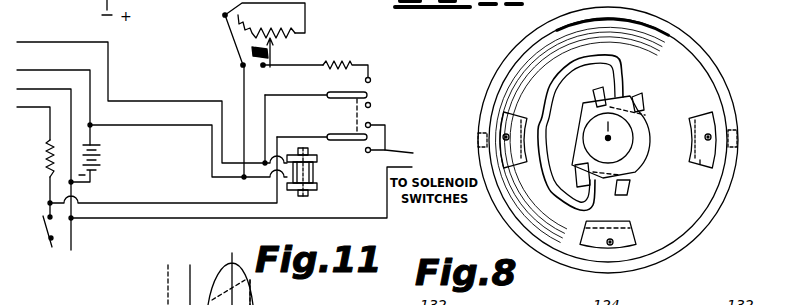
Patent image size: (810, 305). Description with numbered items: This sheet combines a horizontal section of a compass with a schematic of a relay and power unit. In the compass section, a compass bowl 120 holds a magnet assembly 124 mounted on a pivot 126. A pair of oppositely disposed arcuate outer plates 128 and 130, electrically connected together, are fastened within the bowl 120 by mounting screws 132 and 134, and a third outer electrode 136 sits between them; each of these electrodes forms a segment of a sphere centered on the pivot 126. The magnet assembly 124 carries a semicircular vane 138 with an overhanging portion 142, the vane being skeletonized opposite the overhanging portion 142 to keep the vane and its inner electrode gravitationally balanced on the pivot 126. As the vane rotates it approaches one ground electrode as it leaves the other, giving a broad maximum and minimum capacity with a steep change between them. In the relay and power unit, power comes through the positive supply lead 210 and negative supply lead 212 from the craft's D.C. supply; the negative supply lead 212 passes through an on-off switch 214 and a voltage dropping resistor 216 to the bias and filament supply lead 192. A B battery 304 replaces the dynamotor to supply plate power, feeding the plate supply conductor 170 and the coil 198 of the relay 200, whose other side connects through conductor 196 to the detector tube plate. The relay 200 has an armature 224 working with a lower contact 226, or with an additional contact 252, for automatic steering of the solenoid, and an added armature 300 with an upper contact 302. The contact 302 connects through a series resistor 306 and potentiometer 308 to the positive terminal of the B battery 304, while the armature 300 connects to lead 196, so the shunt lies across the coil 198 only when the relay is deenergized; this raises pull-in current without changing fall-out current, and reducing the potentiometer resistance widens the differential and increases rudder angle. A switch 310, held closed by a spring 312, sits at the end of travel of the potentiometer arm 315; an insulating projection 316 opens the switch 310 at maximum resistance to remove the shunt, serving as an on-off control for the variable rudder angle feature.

In FIG. 11, the conductor 196 is at (60, 42).
In FIG. 11, the plate supply conductor 170 is at (55, 70).
In FIG. 11, the positive supply lead 210 is at (31, 89).
In FIG. 11, the bias and filament supply lead 192 is at (50, 130).
In FIG. 11, the voltage dropping resistor 216 is at (46, 163).
In FIG. 11, the on-off switch 214 is at (45, 220).
In FIG. 11, the negative supply lead 212 is at (45, 238).
In FIG. 11, the B battery 304 is at (100, 160).
In FIG. 11, the switch 310 is at (225, 15).
In FIG. 11, the spring 312 is at (237, 30).
In FIG. 11, the potentiometer 308 is at (290, 34).
In FIG. 11, the insulating projection 316 is at (243, 65).
In FIG. 11, the potentiometer arm 315 is at (265, 66).
In FIG. 11, the resistor 306 is at (348, 62).
In FIG. 11, the contact 302 is at (370, 78).
In FIG. 11, the armature 300 is at (335, 90).
In FIG. 11, the armature 224 is at (340, 133).
In FIG. 11, the contact 226 is at (371, 125).
In FIG. 11, the contact 252 is at (380, 152).
In FIG. 11, the relay 200 is at (319, 163).
In FIG. 11, the coil 198 is at (315, 178).
In FIG. 8, the compass bowl 120 is at (722, 88).
In FIG. 8, the vane 138 is at (624, 97).
In FIG. 8, the overhanging portion 142 is at (648, 133).
In FIG. 8, the magnet assembly 124 is at (643, 103).
In FIG. 8, the pivot 126 is at (608, 139).
In FIG. 8, the arcuate outer plate 130 is at (514, 118).
In FIG. 8, the mounting screw 134 is at (703, 114).
In FIG. 8, the arcuate outer plate 128 is at (700, 163).
In FIG. 8, the third outer electrode 136 is at (636, 228).
In FIG. 8, the mounting screw 132 is at (508, 163).